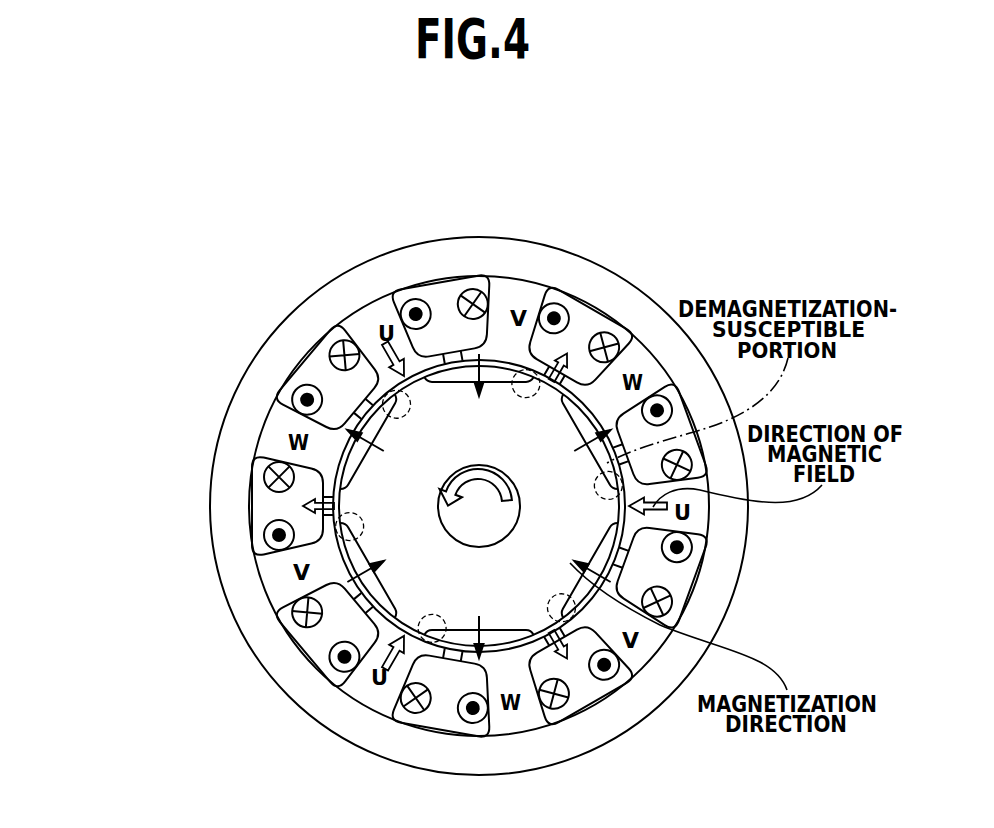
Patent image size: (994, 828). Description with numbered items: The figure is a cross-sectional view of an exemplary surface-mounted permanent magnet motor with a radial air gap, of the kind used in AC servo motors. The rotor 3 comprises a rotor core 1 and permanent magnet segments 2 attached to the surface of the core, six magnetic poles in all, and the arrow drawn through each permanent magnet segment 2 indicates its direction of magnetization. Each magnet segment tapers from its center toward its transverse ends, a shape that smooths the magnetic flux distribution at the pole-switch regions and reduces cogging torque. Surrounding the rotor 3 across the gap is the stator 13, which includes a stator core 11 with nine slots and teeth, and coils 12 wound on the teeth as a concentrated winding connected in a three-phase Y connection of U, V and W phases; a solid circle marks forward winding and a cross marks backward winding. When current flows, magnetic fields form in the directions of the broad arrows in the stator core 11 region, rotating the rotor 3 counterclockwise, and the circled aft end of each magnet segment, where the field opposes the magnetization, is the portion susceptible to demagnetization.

The rotor core 1 is at (347, 494).
The permanent magnet segments 2 is at (355, 465).
The rotor 3 is at (120, 458).
The stator core 11 is at (368, 278).
The coils 12 is at (309, 399).
The stator 13 is at (310, 161).